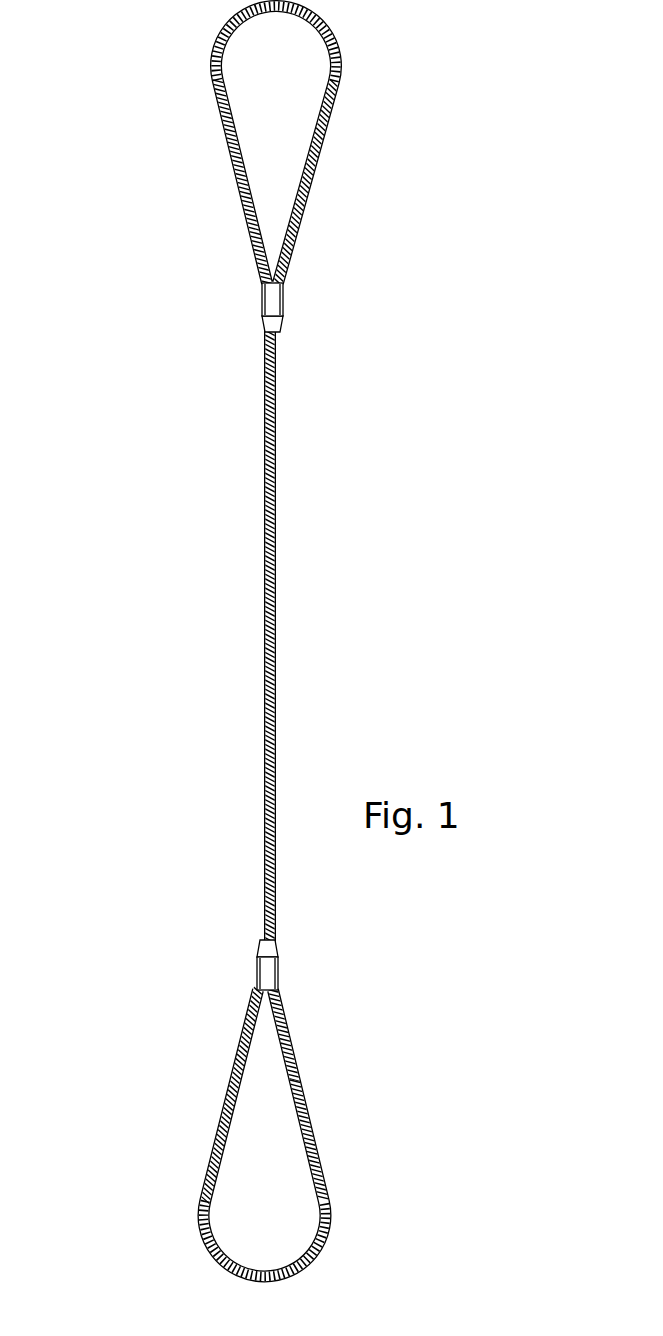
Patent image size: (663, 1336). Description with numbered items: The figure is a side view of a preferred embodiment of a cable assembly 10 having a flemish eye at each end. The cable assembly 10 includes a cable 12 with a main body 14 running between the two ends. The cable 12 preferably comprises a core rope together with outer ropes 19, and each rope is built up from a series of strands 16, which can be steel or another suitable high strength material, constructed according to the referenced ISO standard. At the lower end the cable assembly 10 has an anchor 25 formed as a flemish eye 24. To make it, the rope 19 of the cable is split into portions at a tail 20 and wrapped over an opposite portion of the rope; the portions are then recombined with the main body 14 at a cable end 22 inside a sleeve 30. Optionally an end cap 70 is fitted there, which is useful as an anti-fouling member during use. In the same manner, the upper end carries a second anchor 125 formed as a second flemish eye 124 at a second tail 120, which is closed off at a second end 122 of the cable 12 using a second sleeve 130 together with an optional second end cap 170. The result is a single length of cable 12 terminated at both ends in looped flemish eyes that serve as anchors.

The cable assembly 10 is at (252, 553).
The cable 12 is at (264, 668).
The main body 14 is at (276, 637).
The strands 16 is at (250, 1273).
The outer ropes 19 is at (312, 1131).
The tail 20 is at (286, 1022).
The cable end 22 is at (292, 960).
The flemish eye 24 is at (215, 1139).
The anchor 25 is at (216, 1088).
The sleeve 30 is at (256, 972).
The end cap 70 is at (323, 930).
The second tail 120 is at (333, 144).
The second end 122 is at (299, 312).
The second flemish eye 124 is at (217, 104).
The second anchor 125 is at (224, 181).
The second sleeve 130 is at (261, 298).
The second end cap 170 is at (212, 345).